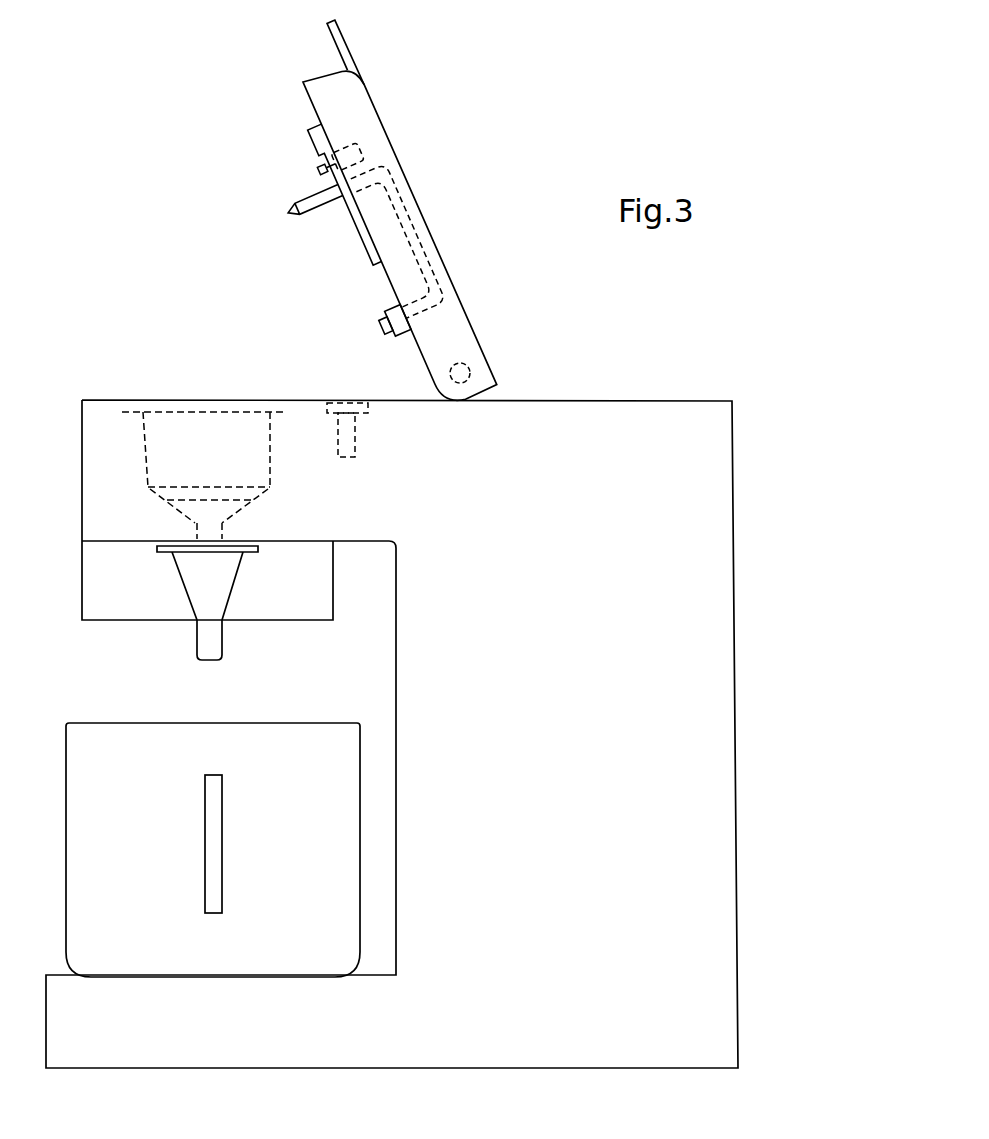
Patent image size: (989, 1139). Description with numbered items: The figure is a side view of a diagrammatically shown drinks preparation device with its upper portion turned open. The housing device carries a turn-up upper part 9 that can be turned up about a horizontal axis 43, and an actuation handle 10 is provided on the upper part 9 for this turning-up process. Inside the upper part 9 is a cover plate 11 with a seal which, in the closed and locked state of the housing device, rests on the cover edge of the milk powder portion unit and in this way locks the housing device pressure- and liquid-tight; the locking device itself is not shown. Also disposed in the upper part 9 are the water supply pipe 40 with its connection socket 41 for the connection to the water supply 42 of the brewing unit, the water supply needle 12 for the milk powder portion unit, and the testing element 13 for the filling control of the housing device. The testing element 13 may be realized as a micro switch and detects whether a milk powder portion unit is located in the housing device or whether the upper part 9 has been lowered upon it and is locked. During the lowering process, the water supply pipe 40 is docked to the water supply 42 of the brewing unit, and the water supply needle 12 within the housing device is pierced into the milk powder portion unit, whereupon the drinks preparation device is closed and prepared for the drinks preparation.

The turn-up upper part 9 is at (348, 108).
The actuation handle 10 is at (345, 43).
The cover plate 11 is at (355, 232).
The water supply needle 12 is at (310, 205).
The testing element 13 is at (340, 158).
The water supply pipe 40 is at (397, 207).
The connection socket 41 is at (378, 325).
The water supply 42 is at (345, 410).
The horizontal axis 43 is at (468, 372).